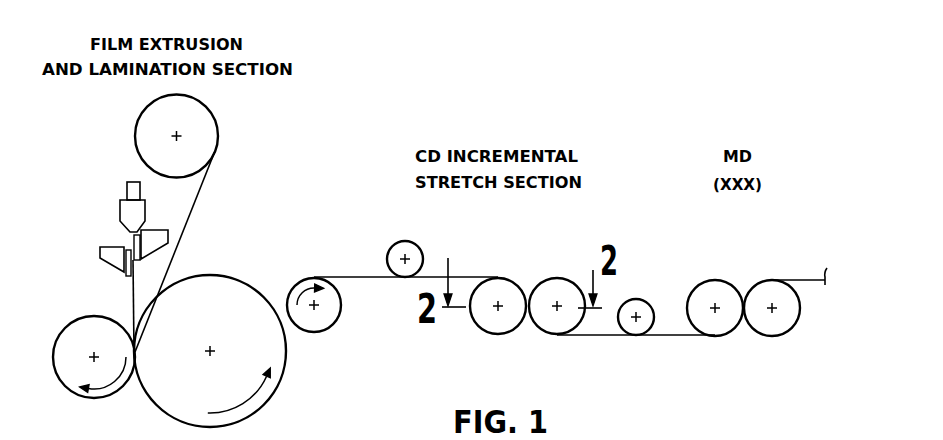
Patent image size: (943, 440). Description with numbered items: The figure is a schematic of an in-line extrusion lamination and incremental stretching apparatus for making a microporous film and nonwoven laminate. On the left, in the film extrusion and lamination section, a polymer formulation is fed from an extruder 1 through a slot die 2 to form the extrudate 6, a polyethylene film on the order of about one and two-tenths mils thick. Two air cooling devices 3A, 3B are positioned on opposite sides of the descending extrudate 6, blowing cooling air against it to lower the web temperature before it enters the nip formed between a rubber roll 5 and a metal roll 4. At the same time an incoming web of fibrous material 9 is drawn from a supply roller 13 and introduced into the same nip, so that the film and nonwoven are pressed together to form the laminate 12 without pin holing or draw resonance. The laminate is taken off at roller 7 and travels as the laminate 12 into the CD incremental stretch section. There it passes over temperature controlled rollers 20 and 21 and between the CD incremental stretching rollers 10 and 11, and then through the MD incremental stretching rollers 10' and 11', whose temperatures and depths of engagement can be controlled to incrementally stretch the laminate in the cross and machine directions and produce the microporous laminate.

The extruder 1 is at (127, 190).
The slot die 2 is at (120, 213).
The air cooling device 3A is at (168, 237).
The air cooling device 3B is at (100, 247).
The metal roll 4 is at (227, 277).
The rubber roll 5 is at (62, 379).
The extrudate 6 is at (133, 314).
The roller 7 is at (327, 328).
The web of fibrous material 9 is at (199, 193).
The CD incremental stretching roller 10 is at (491, 322).
The CD incremental stretching roller 11 is at (622, 321).
The laminate 12 is at (349, 277).
The roller 13 is at (218, 130).
The temperature controlled roller 20 is at (413, 243).
The temperature controlled roller 21 is at (634, 300).
The MD incremental stretching roller 10' is at (717, 322).
The MD incremental stretching roller 11' is at (785, 316).